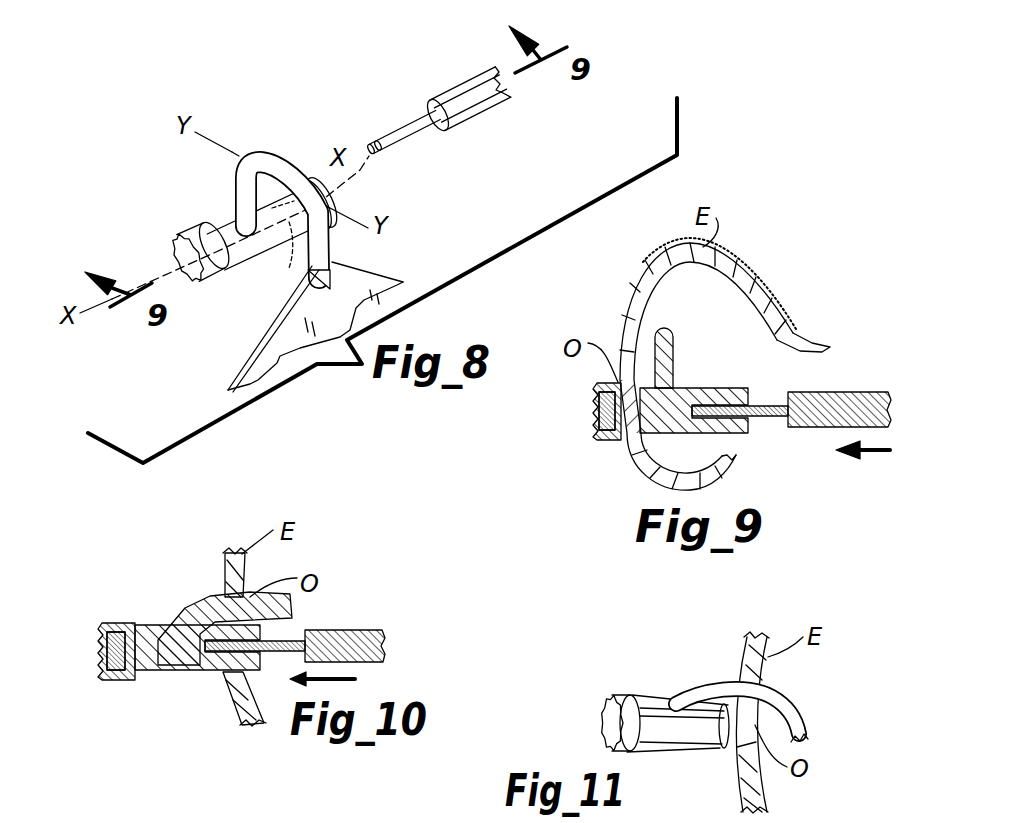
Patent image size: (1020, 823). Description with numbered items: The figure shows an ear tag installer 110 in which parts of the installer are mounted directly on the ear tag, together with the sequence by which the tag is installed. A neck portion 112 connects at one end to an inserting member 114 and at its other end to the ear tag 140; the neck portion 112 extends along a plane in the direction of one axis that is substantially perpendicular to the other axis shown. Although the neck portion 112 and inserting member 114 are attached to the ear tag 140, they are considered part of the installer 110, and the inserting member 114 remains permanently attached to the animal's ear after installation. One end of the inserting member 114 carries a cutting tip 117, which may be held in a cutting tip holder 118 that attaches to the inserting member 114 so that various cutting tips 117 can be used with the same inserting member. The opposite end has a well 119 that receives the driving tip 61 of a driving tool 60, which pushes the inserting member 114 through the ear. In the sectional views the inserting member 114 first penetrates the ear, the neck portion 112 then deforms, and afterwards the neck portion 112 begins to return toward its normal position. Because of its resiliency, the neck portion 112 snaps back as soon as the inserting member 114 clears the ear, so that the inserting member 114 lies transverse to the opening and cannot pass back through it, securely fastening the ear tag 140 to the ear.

In FIG. 8, the driving tool 60 is at (448, 62).
In FIG. 9, the driving tool 60 is at (866, 366).
In FIG. 10, the driving tool 60 is at (428, 560).
In FIG. 8, the driving tip 61 is at (388, 136).
In FIG. 9, the driving tip 61 is at (770, 405).
In FIG. 10, the driving tip 61 is at (293, 640).
In FIG. 8, the ear tag installer 110 is at (241, 118).
In FIG. 9, the ear tag installer 110 is at (815, 462).
In FIG. 10, the ear tag installer 110 is at (220, 527).
In FIG. 8, the neck portion 112 is at (284, 160).
In FIG. 9, the neck portion 112 is at (673, 328).
In FIG. 10, the neck portion 112 is at (202, 603).
In FIG. 11, the neck portion 112 is at (707, 685).
In FIG. 8, the inserting member 114 is at (218, 236).
In FIG. 9, the inserting member 114 is at (692, 388).
In FIG. 10, the inserting member 114 is at (178, 671).
In FIG. 11, the inserting member 114 is at (677, 745).
In FIG. 9, the cutting tip 117 is at (598, 416).
In FIG. 10, the cutting tip 117 is at (112, 665).
In FIG. 8, the cutting tip holder 118 is at (174, 256).
In FIG. 9, the cutting tip holder 118 is at (594, 389).
In FIG. 10, the cutting tip holder 118 is at (110, 622).
In FIG. 11, the cutting tip holder 118 is at (610, 712).
In FIG. 8, the well 119 is at (289, 262).
In FIG. 9, the well 119 is at (734, 433).
In FIG. 10, the well 119 is at (226, 672).
In FIG. 8, the ear tag 140 is at (367, 287).